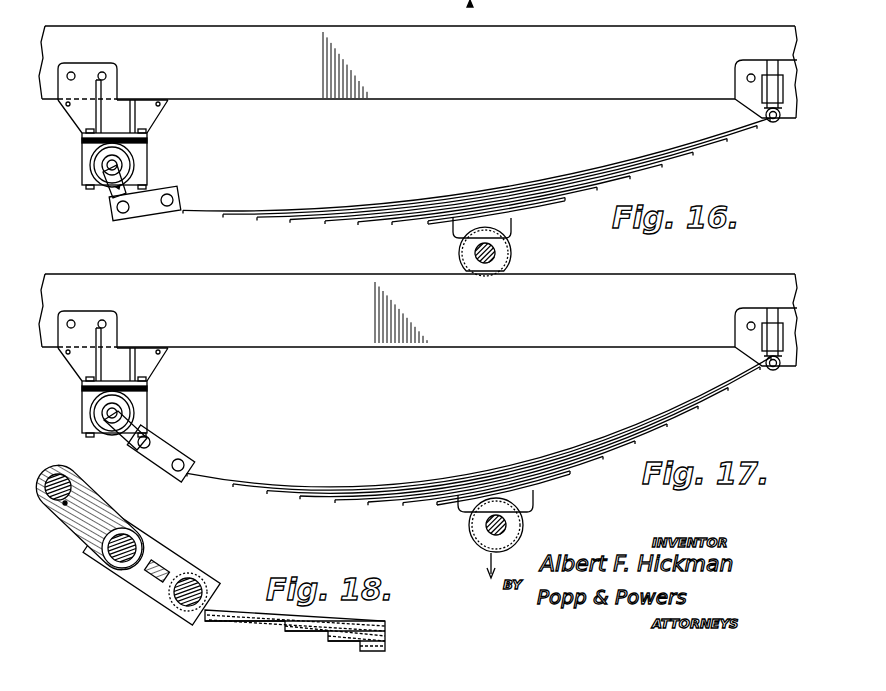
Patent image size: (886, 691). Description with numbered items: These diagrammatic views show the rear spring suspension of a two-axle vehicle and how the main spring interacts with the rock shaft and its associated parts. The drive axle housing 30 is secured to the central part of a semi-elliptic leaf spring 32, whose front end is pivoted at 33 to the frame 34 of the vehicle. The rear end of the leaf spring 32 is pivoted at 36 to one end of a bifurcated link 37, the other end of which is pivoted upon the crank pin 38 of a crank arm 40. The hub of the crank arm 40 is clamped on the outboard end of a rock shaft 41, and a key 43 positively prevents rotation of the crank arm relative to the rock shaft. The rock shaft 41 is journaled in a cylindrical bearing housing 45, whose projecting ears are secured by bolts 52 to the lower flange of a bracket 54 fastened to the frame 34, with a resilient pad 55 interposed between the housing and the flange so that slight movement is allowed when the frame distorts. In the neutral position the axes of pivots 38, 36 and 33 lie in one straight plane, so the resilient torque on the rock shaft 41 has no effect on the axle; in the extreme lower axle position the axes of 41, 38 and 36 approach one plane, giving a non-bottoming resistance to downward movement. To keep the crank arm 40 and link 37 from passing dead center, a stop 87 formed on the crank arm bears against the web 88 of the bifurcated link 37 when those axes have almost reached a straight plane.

In FIG. 16, the drive axle housing 30 is at (459, 255).
In FIG. 17, the drive axle housing 30 is at (470, 535).
In FIG. 16, the semi-elliptic leaf spring 32 is at (300, 226).
In FIG. 17, the semi-elliptic leaf spring 32 is at (305, 504).
In FIG. 18, the semi-elliptic leaf spring 32 is at (386, 650).
In FIG. 16, the pivot 33 is at (778, 124).
In FIG. 17, the pivot 33 is at (778, 371).
In FIG. 16, the frame 34 is at (302, 28).
In FIG. 17, the frame 34 is at (286, 276).
In FIG. 16, the pivot 36 is at (169, 208).
In FIG. 17, the pivot 36 is at (174, 473).
In FIG. 18, the pivot 36 is at (178, 610).
In FIG. 16, the bifurcated link 37 is at (147, 210).
In FIG. 17, the bifurcated link 37 is at (156, 458).
In FIG. 18, the bifurcated link 37 is at (142, 600).
In FIG. 16, the crank pin 38 is at (124, 214).
In FIG. 17, the crank pin 38 is at (141, 450).
In FIG. 18, the crank pin 38 is at (110, 563).
In FIG. 18, the crank arm 40 is at (60, 532).
In FIG. 16, the rock shaft 41 is at (102, 168).
In FIG. 17, the rock shaft 41 is at (102, 415).
In FIG. 18, the rock shaft 41 is at (44, 482).
In FIG. 16, the key 43 is at (104, 185).
In FIG. 17, the key 43 is at (120, 430).
In FIG. 18, the key 43 is at (50, 512).
In FIG. 16, the bearing housing 45 is at (82, 165).
In FIG. 17, the bearing housing 45 is at (82, 409).
In FIG. 16, the bolts 52 is at (86, 189).
In FIG. 17, the bolts 52 is at (86, 437).
In FIG. 16, the bracket 54 is at (74, 118).
In FIG. 17, the bracket 54 is at (74, 361).
In FIG. 16, the pad 55 is at (82, 142).
In FIG. 17, the pad 55 is at (82, 388).
In FIG. 18, the stop 87 is at (166, 566).
In FIG. 18, the web 88 is at (142, 579).